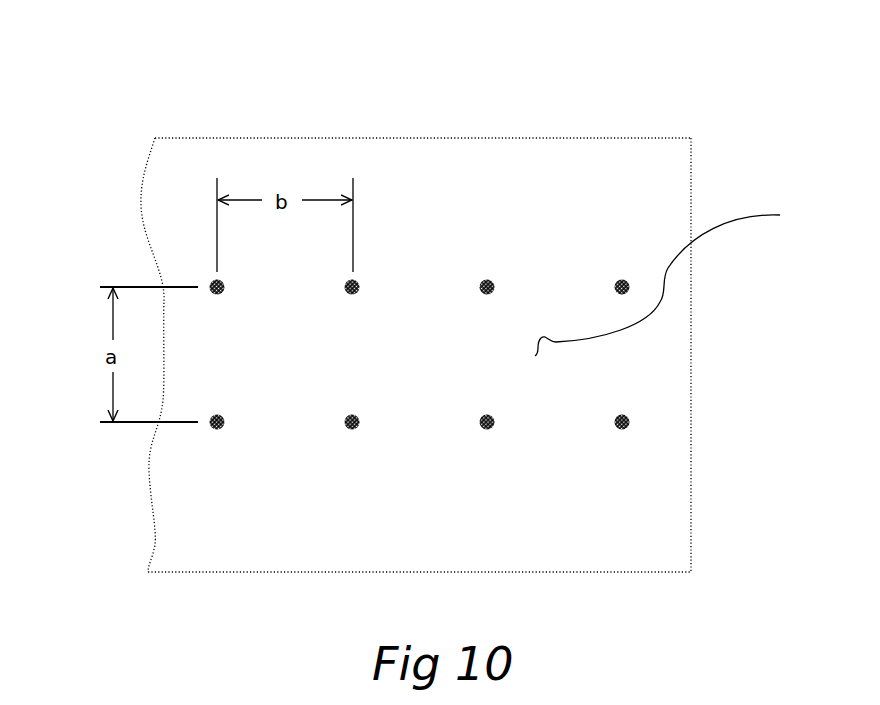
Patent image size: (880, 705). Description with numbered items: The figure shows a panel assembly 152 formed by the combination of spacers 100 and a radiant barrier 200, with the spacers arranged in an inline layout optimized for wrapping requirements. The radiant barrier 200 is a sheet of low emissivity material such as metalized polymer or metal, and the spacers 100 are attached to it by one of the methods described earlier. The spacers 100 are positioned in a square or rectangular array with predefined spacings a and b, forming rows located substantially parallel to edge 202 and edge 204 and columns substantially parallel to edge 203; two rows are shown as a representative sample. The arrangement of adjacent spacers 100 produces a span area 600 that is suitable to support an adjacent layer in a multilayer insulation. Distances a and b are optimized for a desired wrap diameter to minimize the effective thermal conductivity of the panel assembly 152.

The panel assembly 152 is at (153, 137).
The radiant barrier 200 is at (442, 340).
The edge 202 is at (445, 140).
The edge 203 is at (692, 360).
The edge 204 is at (555, 573).
The spacer 100 is at (626, 426).
The span area 600 is at (683, 282).